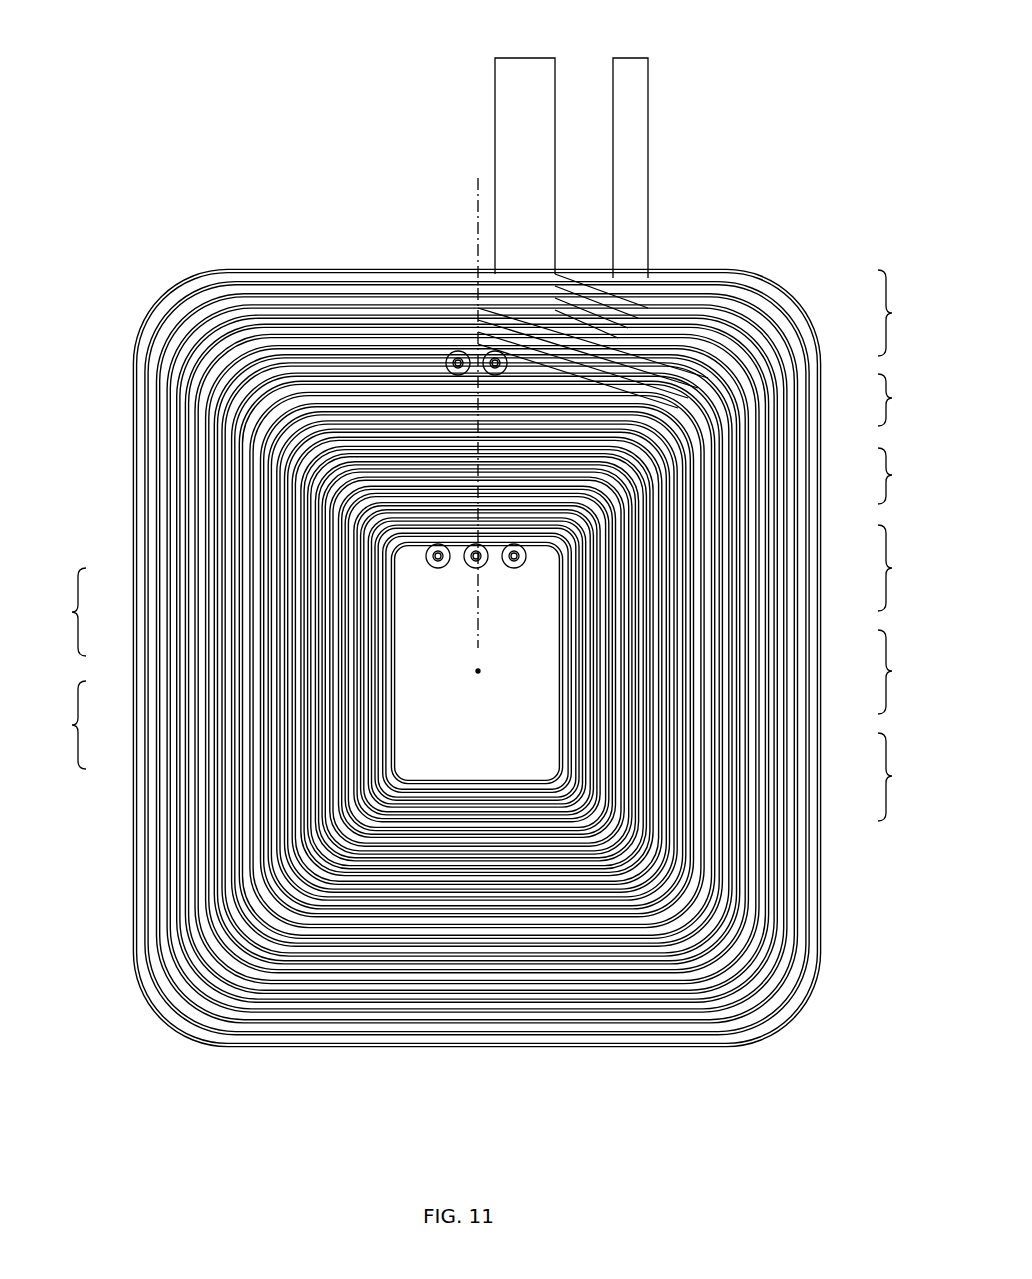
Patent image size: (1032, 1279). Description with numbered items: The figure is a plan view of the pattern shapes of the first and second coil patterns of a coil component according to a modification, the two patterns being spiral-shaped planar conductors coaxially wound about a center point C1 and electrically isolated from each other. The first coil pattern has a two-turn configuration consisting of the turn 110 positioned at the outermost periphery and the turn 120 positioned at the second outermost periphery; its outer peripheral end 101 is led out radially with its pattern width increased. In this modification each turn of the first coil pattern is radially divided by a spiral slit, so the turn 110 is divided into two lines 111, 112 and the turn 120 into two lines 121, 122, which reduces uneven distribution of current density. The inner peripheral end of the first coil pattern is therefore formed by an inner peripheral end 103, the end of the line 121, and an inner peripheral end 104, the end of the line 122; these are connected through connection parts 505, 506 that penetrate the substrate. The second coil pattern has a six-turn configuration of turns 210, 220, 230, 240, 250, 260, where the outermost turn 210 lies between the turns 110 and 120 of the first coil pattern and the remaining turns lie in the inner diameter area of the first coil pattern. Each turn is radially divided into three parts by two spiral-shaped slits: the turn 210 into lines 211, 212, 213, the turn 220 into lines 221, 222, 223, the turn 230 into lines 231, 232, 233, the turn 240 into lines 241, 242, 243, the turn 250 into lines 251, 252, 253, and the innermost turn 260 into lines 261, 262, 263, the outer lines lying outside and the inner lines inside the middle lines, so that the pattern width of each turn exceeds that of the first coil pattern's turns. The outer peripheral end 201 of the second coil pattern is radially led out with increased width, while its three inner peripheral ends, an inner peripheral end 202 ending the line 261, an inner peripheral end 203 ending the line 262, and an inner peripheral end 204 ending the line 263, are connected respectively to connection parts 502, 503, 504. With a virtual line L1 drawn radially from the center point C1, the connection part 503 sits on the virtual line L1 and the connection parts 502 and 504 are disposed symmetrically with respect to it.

The outer peripheral end 201 is at (516, 50).
The outer peripheral end 101 is at (621, 50).
The virtual line L1 is at (468, 183).
The center point C1 is at (472, 663).
The inner peripheral end 103 is at (498, 364).
The inner peripheral end 104 is at (440, 347).
The connection part 505 is at (492, 343).
The connection part 506 is at (452, 343).
The inner peripheral end 202 is at (503, 562).
The inner peripheral end 203 is at (465, 562).
The inner peripheral end 204 is at (434, 562).
The connection part 502 is at (510, 560).
The connection part 503 is at (470, 562).
The connection part 504 is at (425, 558).
The turn 210 is at (905, 313).
The line 211 is at (764, 280).
The line 212 is at (777, 306).
The line 213 is at (779, 336).
The turn 110 is at (905, 400).
The line 111 is at (777, 379).
The line 112 is at (768, 406).
The turn 120 is at (905, 476).
The line 121 is at (759, 453).
The line 122 is at (749, 484).
The turn 220 is at (905, 568).
The line 221 is at (730, 531).
The line 222 is at (722, 561).
The line 223 is at (713, 591).
The turn 230 is at (905, 672).
The line 231 is at (695, 636).
The line 232 is at (684, 664).
The line 233 is at (676, 693).
The turn 240 is at (905, 777).
The line 241 is at (660, 739).
The line 242 is at (652, 769).
The line 243 is at (644, 801).
The turn 250 is at (58, 725).
The line 251 is at (332, 686).
The line 252 is at (339, 717).
The line 253 is at (354, 748).
The turn 260 is at (58, 612).
The line 261 is at (362, 573).
The line 262 is at (376, 604).
The line 263 is at (385, 635).